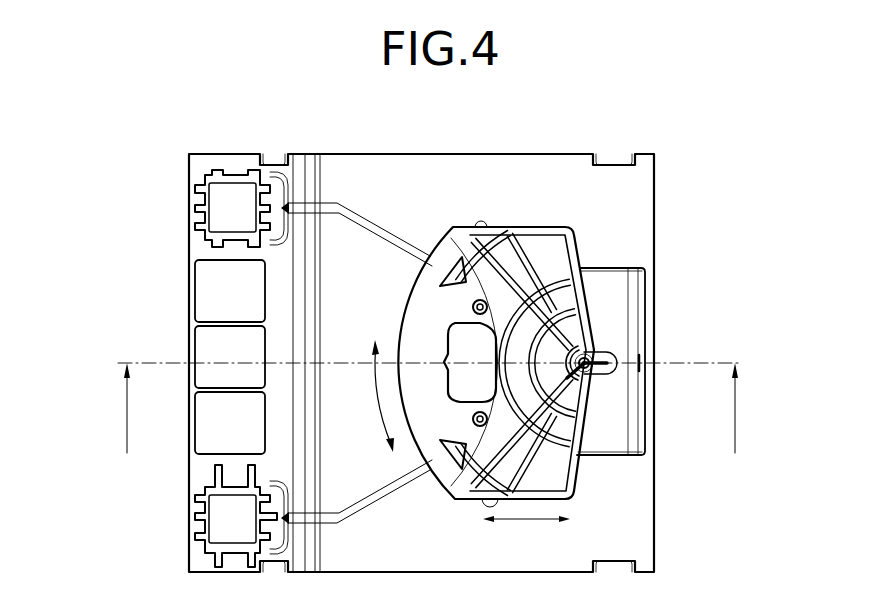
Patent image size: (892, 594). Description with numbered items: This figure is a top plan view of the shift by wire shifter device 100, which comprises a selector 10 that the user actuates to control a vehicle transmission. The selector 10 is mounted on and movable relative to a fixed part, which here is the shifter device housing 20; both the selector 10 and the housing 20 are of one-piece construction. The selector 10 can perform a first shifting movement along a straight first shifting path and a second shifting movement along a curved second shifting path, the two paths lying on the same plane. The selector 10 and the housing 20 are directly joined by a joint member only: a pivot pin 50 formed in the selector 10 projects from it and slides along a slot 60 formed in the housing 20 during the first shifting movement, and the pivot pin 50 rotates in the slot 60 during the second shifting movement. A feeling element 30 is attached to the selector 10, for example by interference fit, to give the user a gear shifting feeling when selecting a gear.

The shift by wire shifter device 100 is at (617, 117).
The shifter device housing 20 is at (347, 166).
The selector 10 is at (458, 240).
The feeling element 30 is at (459, 349).
The slot 60 is at (613, 358).
The pivot pin 50 is at (594, 367).